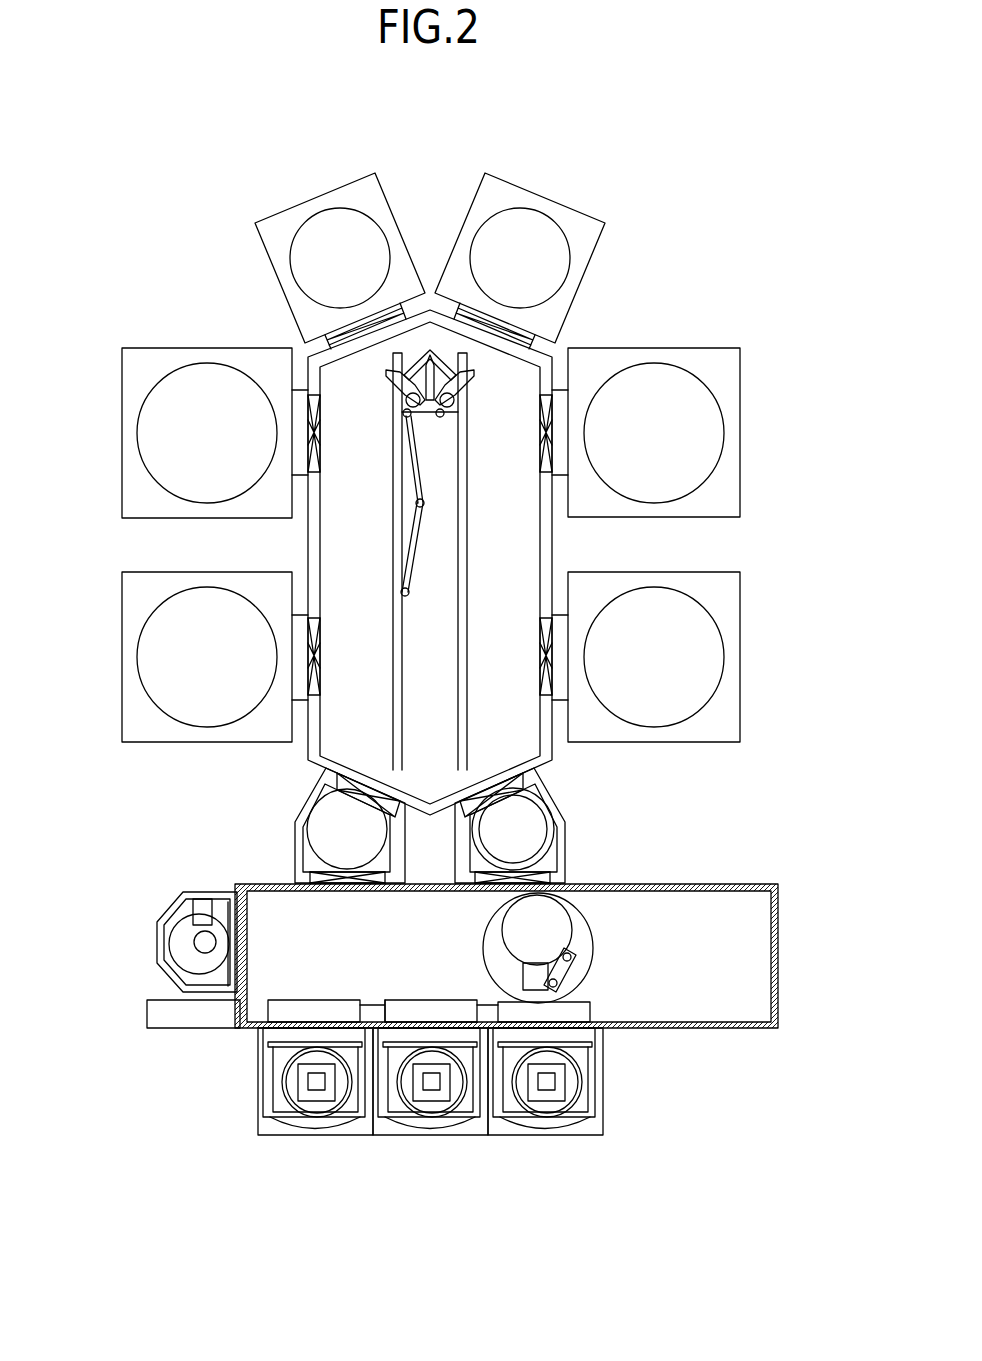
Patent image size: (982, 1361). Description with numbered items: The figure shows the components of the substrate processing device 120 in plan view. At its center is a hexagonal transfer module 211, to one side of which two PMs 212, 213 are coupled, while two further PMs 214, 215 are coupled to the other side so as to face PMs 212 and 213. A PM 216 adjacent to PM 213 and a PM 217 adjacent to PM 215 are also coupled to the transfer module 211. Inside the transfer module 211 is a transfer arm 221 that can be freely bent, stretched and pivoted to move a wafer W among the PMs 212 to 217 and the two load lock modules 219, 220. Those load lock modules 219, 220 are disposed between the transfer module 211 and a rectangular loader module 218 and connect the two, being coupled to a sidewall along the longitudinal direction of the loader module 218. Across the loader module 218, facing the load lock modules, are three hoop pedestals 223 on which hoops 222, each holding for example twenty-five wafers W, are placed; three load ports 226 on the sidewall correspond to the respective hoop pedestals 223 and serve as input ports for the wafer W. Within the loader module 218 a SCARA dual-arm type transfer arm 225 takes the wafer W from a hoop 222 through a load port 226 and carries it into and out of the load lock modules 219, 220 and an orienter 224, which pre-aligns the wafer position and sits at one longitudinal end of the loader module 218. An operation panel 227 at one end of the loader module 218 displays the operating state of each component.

The substrate processing device 120 is at (452, 1244).
The transfer module 211 is at (556, 530).
The PM 212 is at (140, 570).
The PM 213 is at (153, 348).
The PM 214 is at (725, 571).
The PM 215 is at (722, 348).
The PM 216 is at (340, 187).
The PM 217 is at (565, 206).
The loader module 218 is at (750, 884).
The load lock module 219 is at (308, 800).
The load lock module 220 is at (567, 856).
The transfer arm 221 is at (473, 372).
The hoop 222 is at (350, 1104).
The hoop pedestal 223 is at (292, 1136).
The orienter 224 is at (172, 904).
The transfer arm 225 is at (520, 977).
The load port 226 is at (303, 998).
The operation panel 227 is at (180, 1028).
The wafer W is at (554, 829).